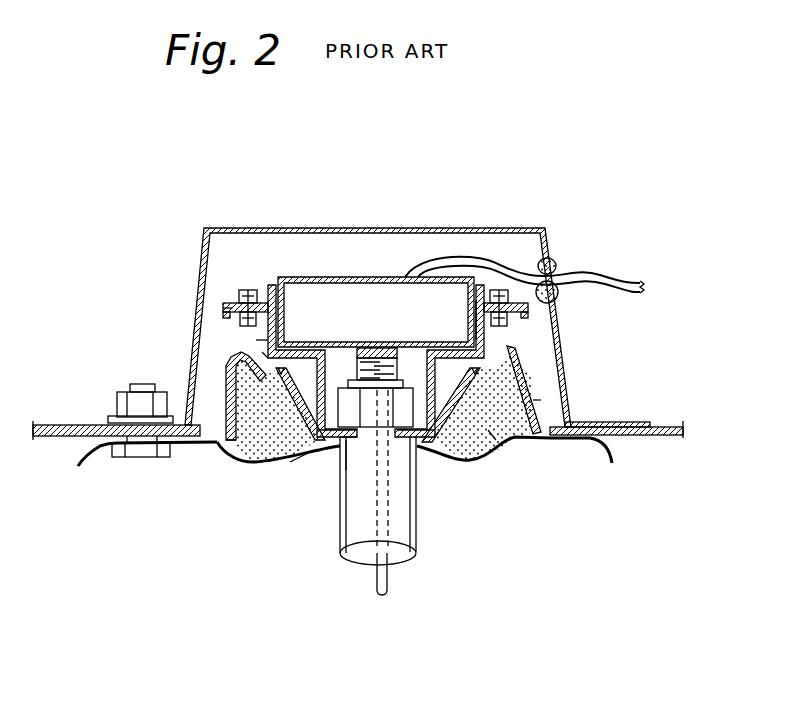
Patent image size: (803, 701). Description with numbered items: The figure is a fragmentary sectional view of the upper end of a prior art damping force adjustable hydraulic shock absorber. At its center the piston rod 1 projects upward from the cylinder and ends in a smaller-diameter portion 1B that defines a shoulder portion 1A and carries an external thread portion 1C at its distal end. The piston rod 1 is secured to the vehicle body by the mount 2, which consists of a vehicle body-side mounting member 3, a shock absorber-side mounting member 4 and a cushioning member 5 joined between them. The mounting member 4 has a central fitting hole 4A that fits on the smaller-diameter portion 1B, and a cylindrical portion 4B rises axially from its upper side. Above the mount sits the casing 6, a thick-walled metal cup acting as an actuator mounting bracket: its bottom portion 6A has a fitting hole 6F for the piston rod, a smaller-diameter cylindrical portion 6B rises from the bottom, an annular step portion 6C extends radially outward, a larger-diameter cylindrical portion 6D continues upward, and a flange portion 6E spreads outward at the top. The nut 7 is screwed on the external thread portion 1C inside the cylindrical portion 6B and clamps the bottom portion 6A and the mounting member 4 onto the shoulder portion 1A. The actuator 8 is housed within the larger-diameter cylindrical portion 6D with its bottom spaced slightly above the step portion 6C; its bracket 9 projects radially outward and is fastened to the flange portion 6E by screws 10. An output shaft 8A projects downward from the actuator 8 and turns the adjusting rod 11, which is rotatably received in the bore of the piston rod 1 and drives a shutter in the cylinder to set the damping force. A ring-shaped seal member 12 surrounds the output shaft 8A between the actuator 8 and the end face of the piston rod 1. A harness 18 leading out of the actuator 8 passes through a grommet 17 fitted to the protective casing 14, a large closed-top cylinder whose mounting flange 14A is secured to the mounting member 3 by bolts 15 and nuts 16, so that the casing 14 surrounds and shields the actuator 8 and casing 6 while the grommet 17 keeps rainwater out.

The piston rod 1 is at (352, 540).
The shoulder portion 1A is at (337, 447).
The smaller-diameter portion 1B is at (355, 445).
The external thread portion 1C is at (430, 347).
The mount 2 is at (538, 377).
The vehicle body-side mounting member 3 is at (80, 466).
The shock absorber-side mounting member 4 is at (455, 465).
The fitting hole 4A is at (405, 470).
The cylindrical portion 4B is at (490, 437).
The cushioning member 5 is at (518, 425).
The casing 6 is at (312, 382).
The bottom portion 6A is at (400, 447).
The smaller-diameter cylindrical portion 6B is at (237, 452).
The step portion 6C is at (262, 355).
The larger-diameter cylindrical portion 6D is at (260, 340).
The flange portion 6E is at (227, 310).
The fitting hole 6F is at (300, 470).
The nut 7 is at (472, 445).
The actuator 8 is at (372, 288).
The output shaft 8A is at (338, 306).
The bracket 9 is at (265, 302).
The screws 10 is at (247, 291).
The adjusting rod 11 is at (378, 572).
The seal member 12 is at (392, 345).
The protective casing 14 is at (445, 228).
The mounting flange 14A is at (618, 422).
The bolts 15 is at (132, 455).
The nuts 16 is at (118, 396).
The grommet 17 is at (557, 257).
The harness 18 is at (620, 280).